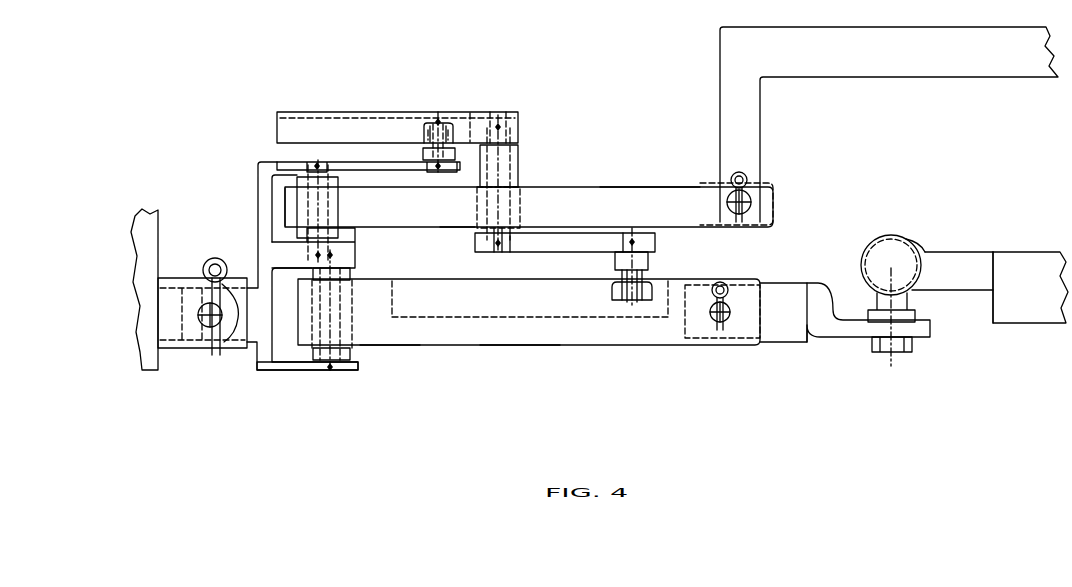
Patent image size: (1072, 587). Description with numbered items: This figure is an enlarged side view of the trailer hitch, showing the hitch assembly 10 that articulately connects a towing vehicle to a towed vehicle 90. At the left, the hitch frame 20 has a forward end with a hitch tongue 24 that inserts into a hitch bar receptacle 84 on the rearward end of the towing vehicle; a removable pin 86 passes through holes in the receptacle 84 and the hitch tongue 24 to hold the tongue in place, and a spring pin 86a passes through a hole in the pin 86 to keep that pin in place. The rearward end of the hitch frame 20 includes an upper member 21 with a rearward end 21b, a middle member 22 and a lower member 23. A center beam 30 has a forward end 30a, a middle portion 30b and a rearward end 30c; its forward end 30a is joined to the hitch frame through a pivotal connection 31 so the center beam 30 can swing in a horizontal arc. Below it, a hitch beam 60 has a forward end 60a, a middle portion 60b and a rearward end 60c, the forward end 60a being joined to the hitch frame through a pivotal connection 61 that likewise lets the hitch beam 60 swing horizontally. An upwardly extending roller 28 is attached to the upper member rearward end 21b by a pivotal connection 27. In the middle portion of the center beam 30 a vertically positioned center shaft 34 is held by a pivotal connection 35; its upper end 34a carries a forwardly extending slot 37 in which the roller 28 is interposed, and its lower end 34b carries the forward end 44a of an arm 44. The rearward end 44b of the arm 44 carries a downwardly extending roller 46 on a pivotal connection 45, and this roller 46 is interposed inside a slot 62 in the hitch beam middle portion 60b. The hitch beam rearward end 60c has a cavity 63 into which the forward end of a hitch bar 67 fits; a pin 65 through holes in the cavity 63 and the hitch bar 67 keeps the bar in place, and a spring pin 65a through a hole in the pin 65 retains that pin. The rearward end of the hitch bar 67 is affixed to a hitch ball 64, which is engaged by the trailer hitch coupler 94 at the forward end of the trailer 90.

The hitch assembly 10 is at (402, 43).
The hitch frame 20 is at (257, 348).
The upper member 21 is at (278, 160).
The rearward end of upper member 21b is at (413, 160).
The middle member 22 is at (355, 254).
The lower member 23 is at (295, 376).
The hitch tongue 24 is at (237, 335).
The pivotal connection 27 is at (458, 123).
The upwardly extending roller 28 is at (424, 127).
The center beam 30 is at (383, 228).
The forward end of center beam 30a is at (283, 218).
The middle portion of center beam 30b is at (464, 228).
The rearward end of center beam 30c is at (627, 195).
The pivotal connection 31 is at (295, 181).
The center shaft 34 is at (518, 146).
The upper end of center shaft 34a is at (510, 114).
The lower end of center shaft 34b is at (482, 246).
The pivotal connection 35 is at (518, 178).
The slot 37 is at (317, 113).
The arm 44 is at (547, 251).
The forward end of arm 44a is at (487, 240).
The rearward end of arm 44b is at (653, 234).
The pivotal connection 45 is at (653, 270).
The downwardly extending roller 46 is at (653, 292).
The hitch beam 60 is at (461, 348).
The forward end of hitch beam 60a is at (402, 349).
The middle portion of hitch beam 60b is at (522, 348).
The rearward end of hitch beam 60c is at (730, 333).
The pivotal connection 61 is at (352, 352).
The slot 62 is at (540, 300).
The cavity 63 is at (748, 322).
The hitch ball 64 is at (877, 243).
The pin 65 is at (724, 310).
The spring pin 65a is at (724, 283).
The hitch bar 67 is at (797, 338).
The hitch bar receptacle 84 is at (197, 278).
The removable pin 86 is at (205, 328).
The spring pin 86a is at (209, 262).
The towed vehicle 90 is at (1020, 252).
The trailer hitch coupler 94 is at (943, 252).